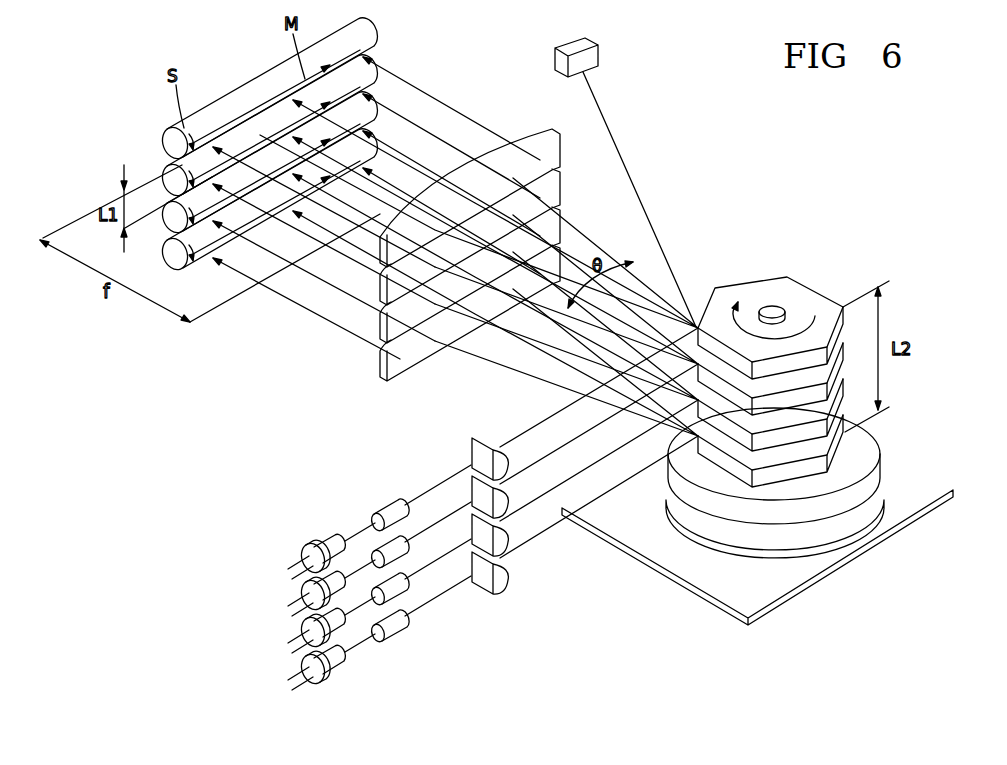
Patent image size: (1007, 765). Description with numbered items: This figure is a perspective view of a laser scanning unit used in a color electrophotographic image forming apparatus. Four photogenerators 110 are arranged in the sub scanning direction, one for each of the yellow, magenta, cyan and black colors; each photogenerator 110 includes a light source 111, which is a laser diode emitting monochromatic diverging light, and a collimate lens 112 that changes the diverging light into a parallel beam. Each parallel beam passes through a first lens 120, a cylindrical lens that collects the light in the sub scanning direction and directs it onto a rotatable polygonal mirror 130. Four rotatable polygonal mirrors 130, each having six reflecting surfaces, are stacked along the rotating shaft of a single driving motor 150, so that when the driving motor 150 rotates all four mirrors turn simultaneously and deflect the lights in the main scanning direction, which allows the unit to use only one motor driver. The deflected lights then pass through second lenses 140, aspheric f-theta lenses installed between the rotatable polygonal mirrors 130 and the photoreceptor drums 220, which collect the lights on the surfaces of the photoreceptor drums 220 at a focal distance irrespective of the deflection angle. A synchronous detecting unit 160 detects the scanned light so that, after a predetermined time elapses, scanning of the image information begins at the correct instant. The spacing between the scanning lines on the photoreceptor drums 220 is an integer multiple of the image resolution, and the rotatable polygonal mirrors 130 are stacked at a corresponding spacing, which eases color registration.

The photogenerator 110 is at (382, 444).
The light source 111 is at (318, 537).
The collimate lens 112 is at (390, 508).
The first lens 120 is at (520, 577).
The rotatable polygonal mirror 130 is at (810, 290).
The second lens 140 is at (505, 146).
The driving motor 150 is at (865, 472).
The synchronous detecting unit 160 is at (598, 60).
The photoreceptor drum 220 is at (250, 87).